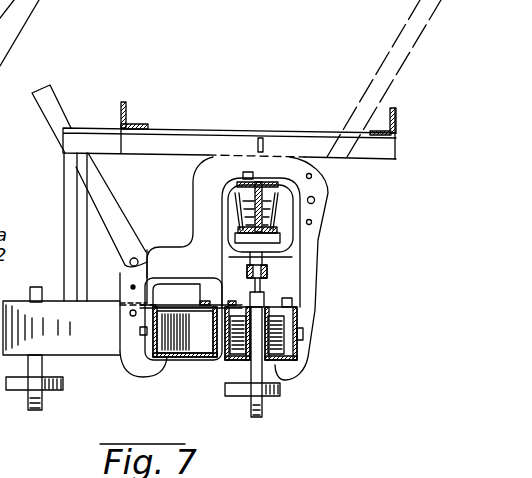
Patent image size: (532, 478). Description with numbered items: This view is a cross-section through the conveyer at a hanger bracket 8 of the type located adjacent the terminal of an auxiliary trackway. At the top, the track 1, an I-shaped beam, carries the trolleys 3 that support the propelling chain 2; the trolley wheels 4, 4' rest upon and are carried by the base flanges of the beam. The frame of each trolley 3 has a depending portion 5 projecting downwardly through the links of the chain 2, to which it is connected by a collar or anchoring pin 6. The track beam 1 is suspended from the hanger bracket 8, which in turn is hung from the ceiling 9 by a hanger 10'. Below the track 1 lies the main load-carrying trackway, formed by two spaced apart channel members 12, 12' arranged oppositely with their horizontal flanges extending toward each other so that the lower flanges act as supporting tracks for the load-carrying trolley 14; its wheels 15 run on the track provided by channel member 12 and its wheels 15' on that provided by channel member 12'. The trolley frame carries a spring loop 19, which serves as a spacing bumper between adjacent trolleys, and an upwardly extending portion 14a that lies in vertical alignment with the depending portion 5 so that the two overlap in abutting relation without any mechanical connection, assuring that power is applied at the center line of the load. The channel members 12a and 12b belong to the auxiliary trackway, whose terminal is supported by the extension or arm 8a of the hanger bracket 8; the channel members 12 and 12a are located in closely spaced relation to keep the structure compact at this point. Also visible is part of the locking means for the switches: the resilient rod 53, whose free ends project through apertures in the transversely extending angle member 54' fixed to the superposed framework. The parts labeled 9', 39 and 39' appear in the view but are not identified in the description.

The rail 9' is at (159, 33).
The hanger 10' is at (251, 150).
The transversely extending angle member 54' is at (229, 126).
The bracket 39' is at (140, 121).
The bracket 39 is at (407, 129).
The resilient rod 53 is at (262, 136).
The track 1 is at (262, 182).
The hanger bracket 8 is at (328, 242).
The extension or arm 8a is at (120, 277).
The trolley 3 is at (272, 261).
The trolley wheel 4 is at (219, 212).
The trolley wheel 4' is at (315, 211).
The collar or anchoring pin 6 is at (247, 271).
The propelling chain 2 is at (268, 272).
The depending portion 5 is at (262, 288).
The load-carrying trolley 14 is at (263, 400).
The spring loop 19 is at (238, 391).
The upwardly extending portion 14a is at (40, 287).
The channel member 12b is at (97, 345).
The channel member 12a is at (213, 340).
The channel member 12 is at (221, 357).
The wheel 15 is at (224, 371).
The channel member 12' is at (312, 339).
The wheel 15' is at (322, 333).
The ceiling 9 is at (31, 386).